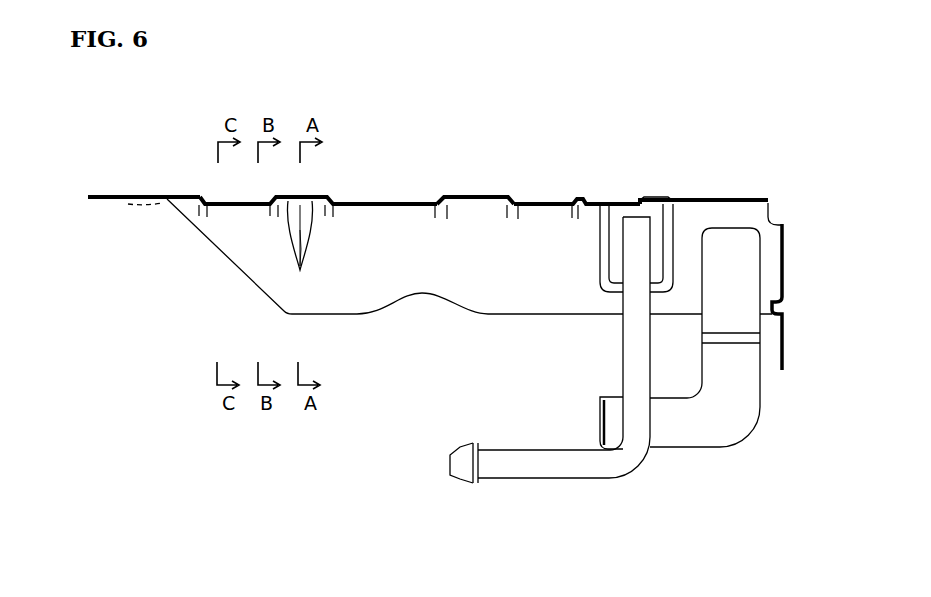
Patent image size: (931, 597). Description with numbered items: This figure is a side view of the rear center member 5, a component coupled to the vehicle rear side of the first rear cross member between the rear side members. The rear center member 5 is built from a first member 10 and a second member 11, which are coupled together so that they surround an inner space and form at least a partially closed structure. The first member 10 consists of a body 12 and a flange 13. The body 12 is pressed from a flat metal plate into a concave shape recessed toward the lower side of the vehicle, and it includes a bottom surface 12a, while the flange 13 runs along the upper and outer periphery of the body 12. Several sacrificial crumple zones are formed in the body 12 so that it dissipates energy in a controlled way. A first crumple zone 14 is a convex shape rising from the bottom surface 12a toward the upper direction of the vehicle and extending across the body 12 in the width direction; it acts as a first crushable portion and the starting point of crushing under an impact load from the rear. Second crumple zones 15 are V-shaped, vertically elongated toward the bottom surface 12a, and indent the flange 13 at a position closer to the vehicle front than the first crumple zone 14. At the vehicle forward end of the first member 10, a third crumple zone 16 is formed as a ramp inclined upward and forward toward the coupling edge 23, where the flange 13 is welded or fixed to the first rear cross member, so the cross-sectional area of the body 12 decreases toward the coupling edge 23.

The rear center member 5 is at (498, 182).
The first member 10 is at (503, 292).
The second member 11 is at (708, 197).
The body 12 is at (553, 316).
The bottom surface 12a is at (333, 316).
The flange 13 is at (131, 195).
The first crumple zone 14 is at (421, 291).
The second crumple zone 15 is at (305, 230).
The third crumple zone 16 is at (237, 270).
The coupling edge 23 is at (152, 207).